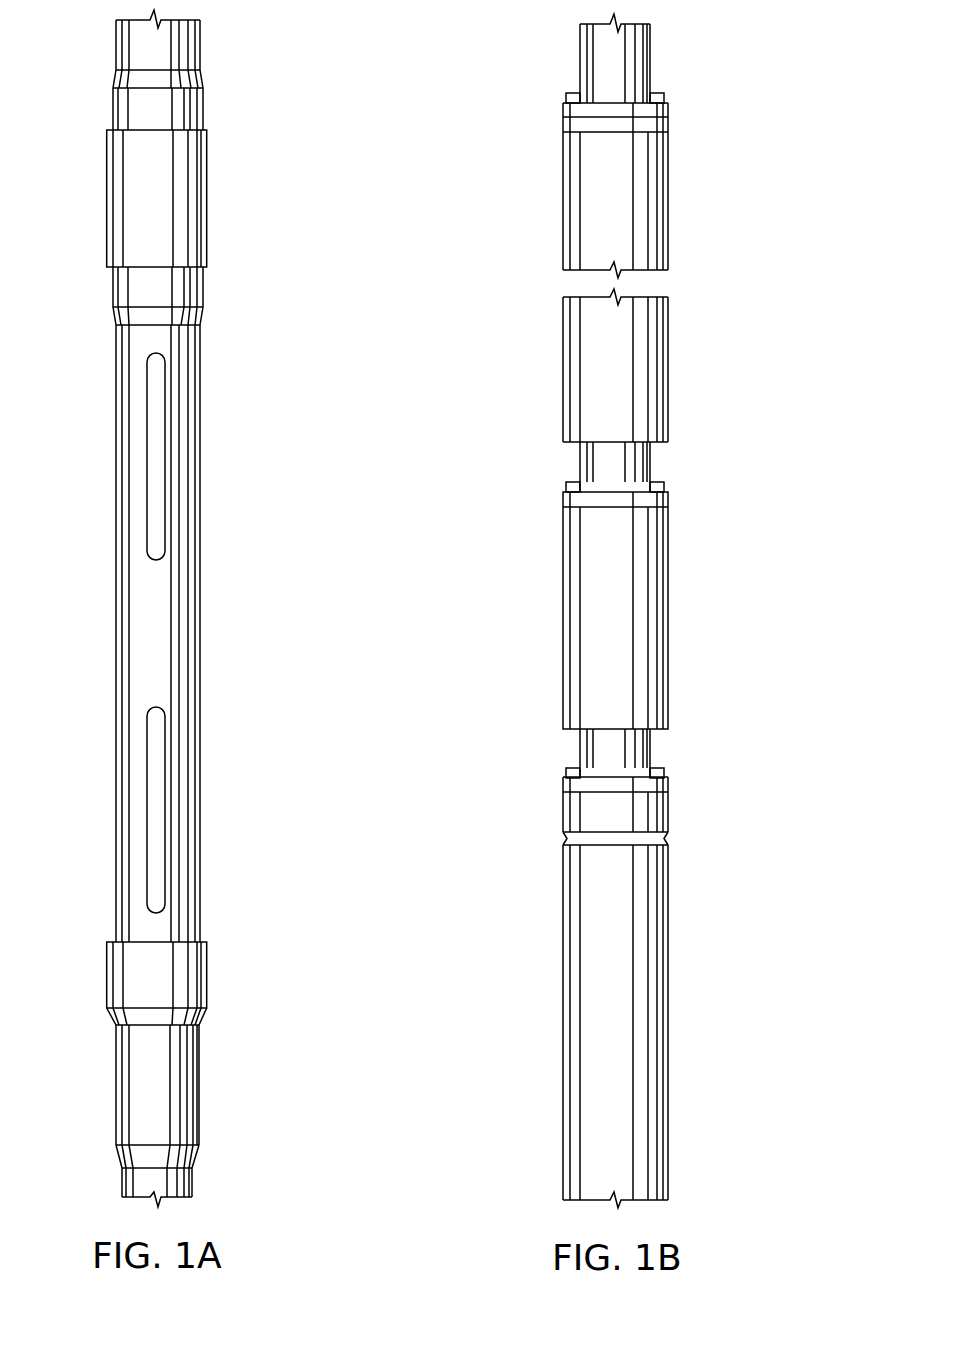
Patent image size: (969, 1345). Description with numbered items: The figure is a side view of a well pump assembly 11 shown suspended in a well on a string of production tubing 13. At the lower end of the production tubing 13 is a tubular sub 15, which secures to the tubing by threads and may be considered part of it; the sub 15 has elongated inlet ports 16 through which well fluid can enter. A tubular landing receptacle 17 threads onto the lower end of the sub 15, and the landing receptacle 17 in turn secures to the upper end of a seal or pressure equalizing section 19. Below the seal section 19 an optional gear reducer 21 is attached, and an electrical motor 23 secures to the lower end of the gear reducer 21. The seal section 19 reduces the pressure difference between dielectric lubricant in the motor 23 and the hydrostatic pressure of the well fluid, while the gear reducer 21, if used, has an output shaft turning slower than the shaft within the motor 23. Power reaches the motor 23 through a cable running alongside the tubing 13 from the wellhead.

In FIG. 1A, the well pump assembly 11 is at (198, 608).
In FIG. 1A, the production tubing 13 is at (200, 48).
In FIG. 1A, the tubular sub 15 is at (117, 653).
In FIG. 1A, the inlet ports 16 is at (155, 453).
In FIG. 1A, the tubular landing receptacle 17 is at (199, 1075).
In FIG. 1B, the tubular landing receptacle 17 is at (650, 60).
In FIG. 1B, the seal section 19 is at (668, 193).
In FIG. 1B, the gear reducer 21 is at (668, 573).
In FIG. 1B, the electrical motor 23 is at (668, 930).